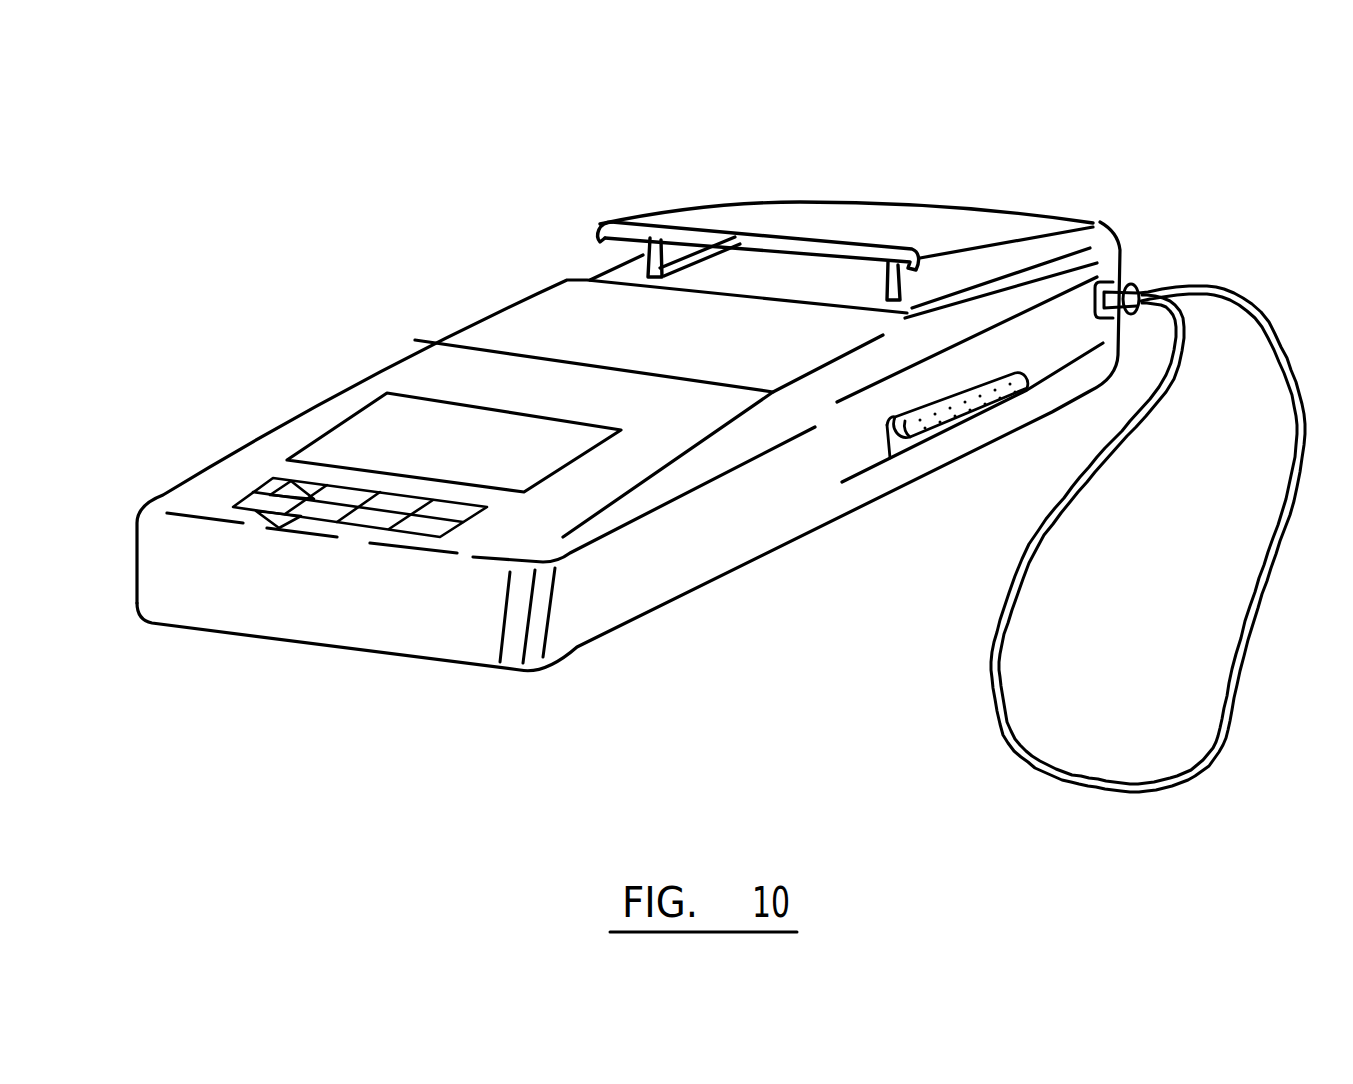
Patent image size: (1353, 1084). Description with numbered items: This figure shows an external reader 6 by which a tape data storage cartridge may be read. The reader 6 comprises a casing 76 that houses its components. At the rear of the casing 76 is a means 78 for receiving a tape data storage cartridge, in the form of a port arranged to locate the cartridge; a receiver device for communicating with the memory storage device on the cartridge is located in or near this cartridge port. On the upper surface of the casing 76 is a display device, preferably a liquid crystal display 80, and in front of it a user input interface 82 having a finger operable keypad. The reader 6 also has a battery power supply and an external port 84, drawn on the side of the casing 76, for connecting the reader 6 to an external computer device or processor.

The external reader 6 is at (765, 570).
The casing 76 is at (601, 595).
The means for receiving a tape data storage cartridge 78 is at (711, 218).
The liquid crystal display 80 is at (353, 430).
The user input interface 82 is at (260, 493).
The external port 84 is at (947, 437).